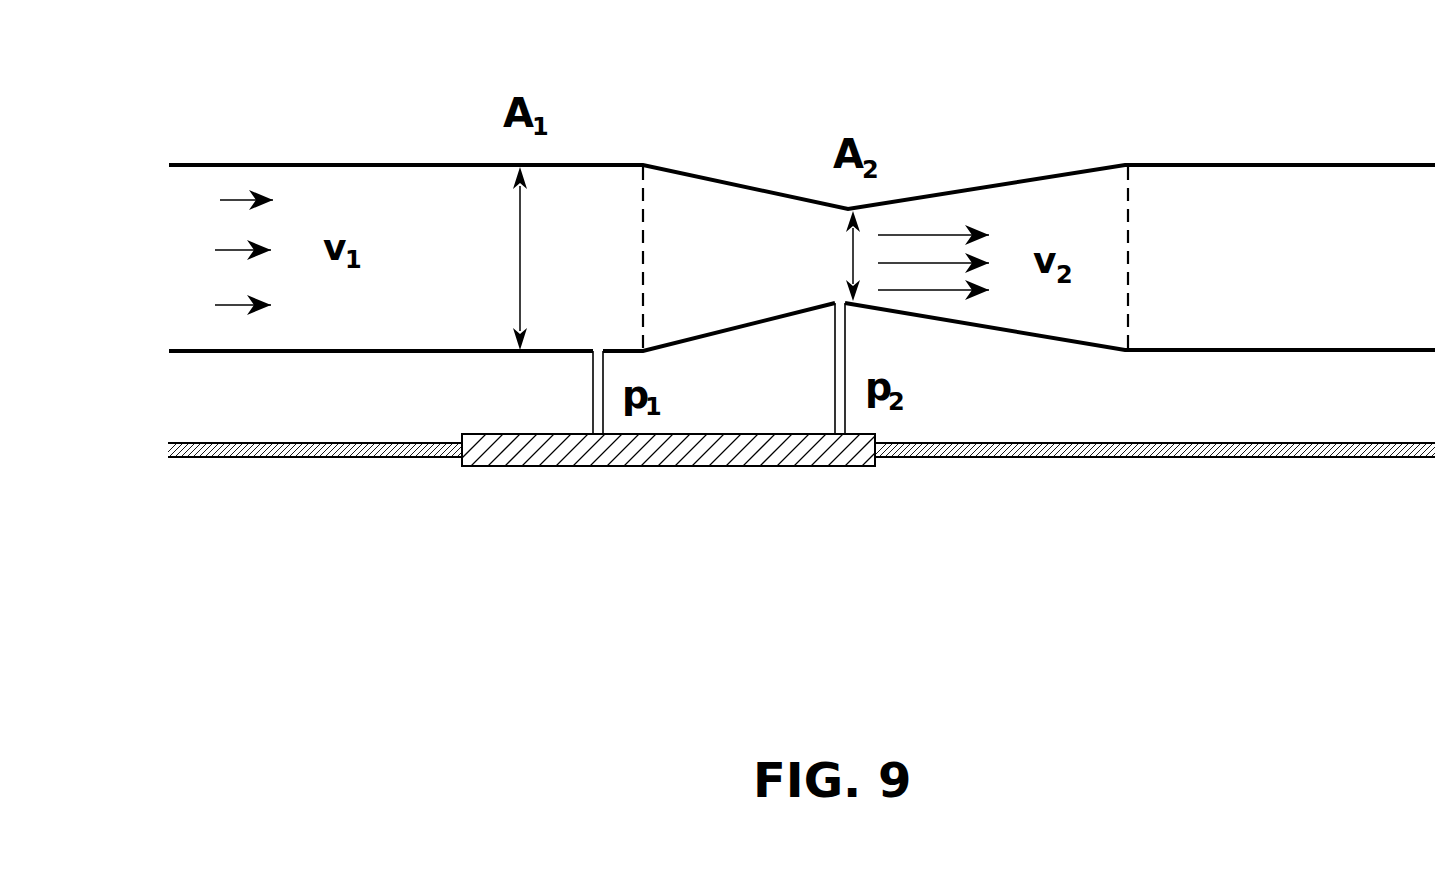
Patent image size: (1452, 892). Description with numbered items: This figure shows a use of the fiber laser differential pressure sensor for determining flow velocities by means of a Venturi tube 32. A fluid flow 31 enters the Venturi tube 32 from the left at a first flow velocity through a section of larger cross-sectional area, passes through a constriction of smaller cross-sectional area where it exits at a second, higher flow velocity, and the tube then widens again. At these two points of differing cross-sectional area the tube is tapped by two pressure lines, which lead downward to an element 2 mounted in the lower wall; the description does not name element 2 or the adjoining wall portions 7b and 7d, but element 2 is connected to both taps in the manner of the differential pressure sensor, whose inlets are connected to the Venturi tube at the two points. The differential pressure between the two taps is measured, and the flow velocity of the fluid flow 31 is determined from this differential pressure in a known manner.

The fluid flow 31 is at (253, 200).
The Venturi tube 32 is at (725, 182).
The pressure sensor 2 is at (660, 452).
The flow channel wall section 7b is at (275, 452).
The flow channel wall section 7d is at (1128, 452).